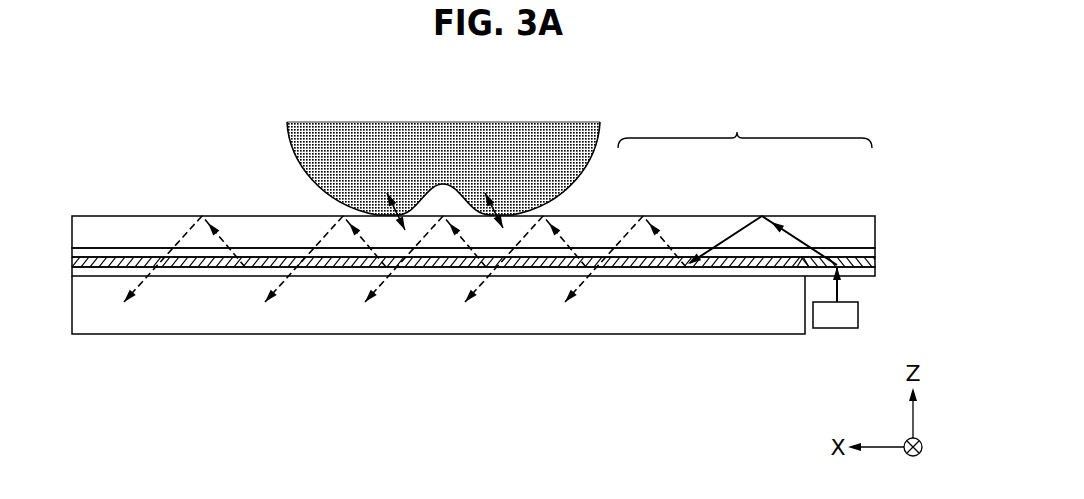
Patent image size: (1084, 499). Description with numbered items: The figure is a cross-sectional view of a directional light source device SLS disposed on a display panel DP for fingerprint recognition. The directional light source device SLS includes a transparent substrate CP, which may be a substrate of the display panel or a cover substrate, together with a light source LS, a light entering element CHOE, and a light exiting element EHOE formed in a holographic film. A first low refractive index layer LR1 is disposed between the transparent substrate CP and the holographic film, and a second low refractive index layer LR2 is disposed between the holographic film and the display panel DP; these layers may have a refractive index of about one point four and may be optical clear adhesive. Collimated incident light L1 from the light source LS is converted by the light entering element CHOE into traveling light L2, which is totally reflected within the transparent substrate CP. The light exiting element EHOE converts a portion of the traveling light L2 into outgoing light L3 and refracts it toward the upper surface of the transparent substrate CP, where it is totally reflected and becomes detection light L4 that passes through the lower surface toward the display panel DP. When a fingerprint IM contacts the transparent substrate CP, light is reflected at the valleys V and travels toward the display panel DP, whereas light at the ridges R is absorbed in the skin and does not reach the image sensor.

The fingerprint IM is at (300, 156).
The ridges R is at (400, 207).
The valleys V is at (446, 179).
The directional light source device SLS is at (745, 127).
The transparent substrate CP is at (620, 225).
The first low refractive index layer LR1 is at (687, 252).
The light exiting element EHOE is at (757, 263).
The second low refractive index layer LR2 is at (792, 272).
The light entering element CHOE is at (850, 257).
The light source LS is at (859, 316).
The display panel DP is at (687, 323).
The incident light L1 is at (830, 292).
The traveling light L2 is at (737, 268).
The outgoing light L3 is at (222, 249).
The detection light L4 is at (147, 284).